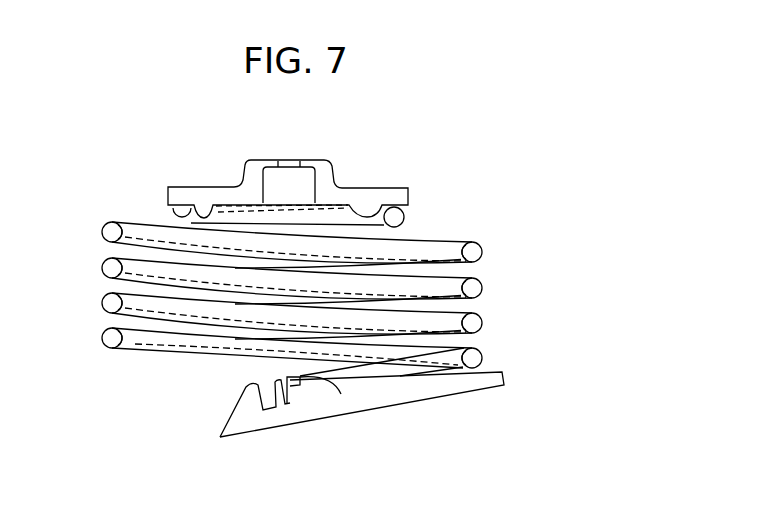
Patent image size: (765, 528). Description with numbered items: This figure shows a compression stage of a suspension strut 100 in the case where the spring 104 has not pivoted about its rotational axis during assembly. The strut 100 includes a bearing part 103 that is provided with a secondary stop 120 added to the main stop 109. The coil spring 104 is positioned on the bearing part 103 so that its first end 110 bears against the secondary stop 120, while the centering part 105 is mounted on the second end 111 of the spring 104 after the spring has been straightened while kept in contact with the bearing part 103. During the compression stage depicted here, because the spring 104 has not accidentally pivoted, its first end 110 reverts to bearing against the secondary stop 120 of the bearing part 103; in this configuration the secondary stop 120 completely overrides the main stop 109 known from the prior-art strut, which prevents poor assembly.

The strut 100 is at (465, 212).
The bearing part 103 is at (447, 390).
The spring 104 is at (167, 342).
The centering part 105 is at (219, 192).
The main stop 109 is at (242, 392).
The first end 110 is at (333, 378).
The second end 111 is at (357, 212).
The secondary stop 120 is at (310, 390).